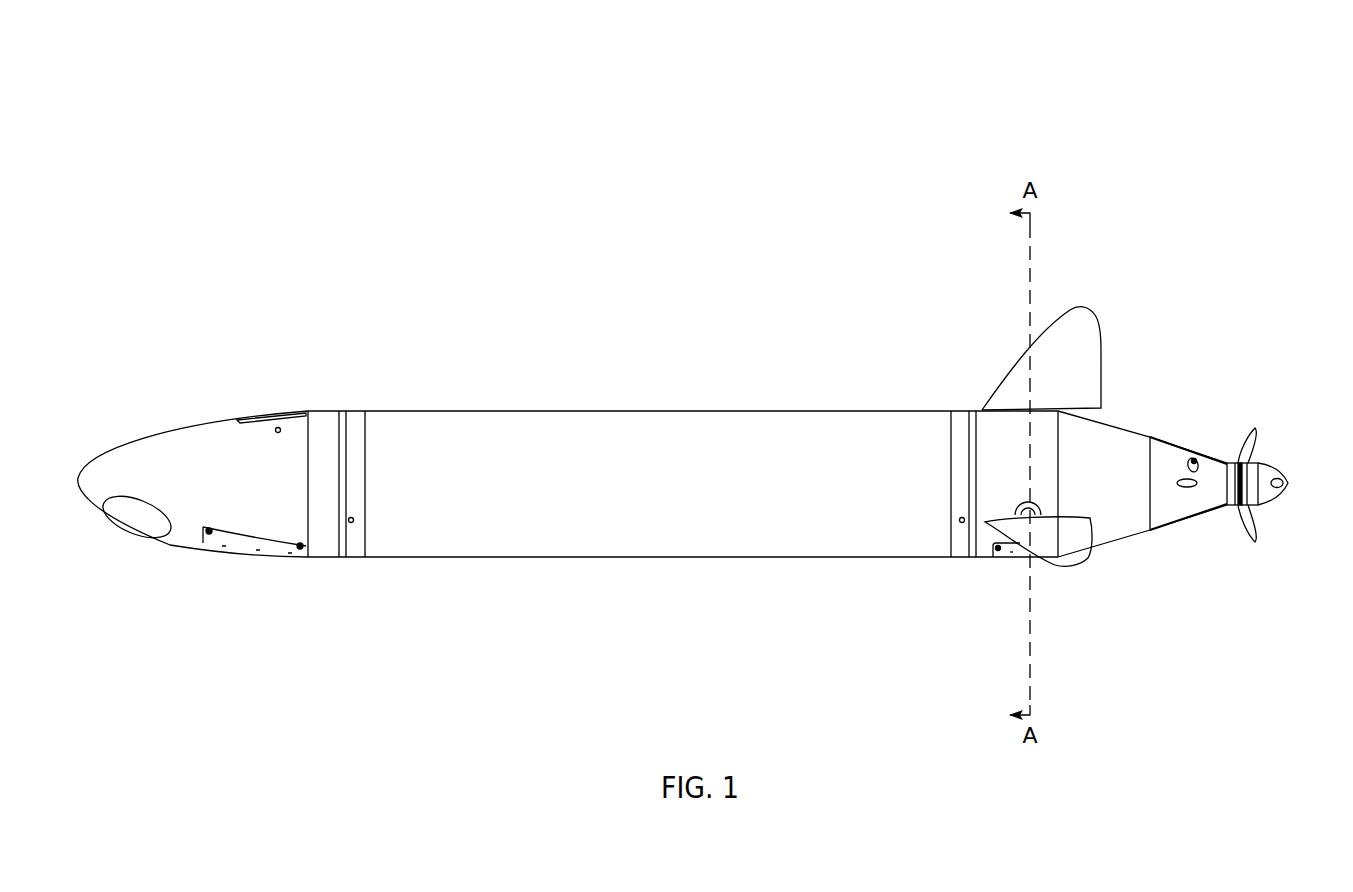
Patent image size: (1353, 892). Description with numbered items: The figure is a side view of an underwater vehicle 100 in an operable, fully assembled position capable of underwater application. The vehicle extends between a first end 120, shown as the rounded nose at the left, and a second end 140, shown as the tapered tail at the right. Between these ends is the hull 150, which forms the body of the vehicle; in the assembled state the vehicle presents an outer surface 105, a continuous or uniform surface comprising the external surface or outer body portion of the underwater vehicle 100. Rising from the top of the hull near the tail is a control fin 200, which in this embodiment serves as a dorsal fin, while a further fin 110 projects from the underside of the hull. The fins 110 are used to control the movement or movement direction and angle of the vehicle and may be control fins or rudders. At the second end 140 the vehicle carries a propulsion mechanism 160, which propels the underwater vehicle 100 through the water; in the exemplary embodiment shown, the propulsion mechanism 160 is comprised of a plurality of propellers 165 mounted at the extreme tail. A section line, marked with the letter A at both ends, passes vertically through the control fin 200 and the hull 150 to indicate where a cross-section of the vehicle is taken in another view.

The underwater vehicle 100 is at (270, 133).
The outer surface 105 is at (534, 408).
The fins 110 is at (1066, 552).
The first end 120 is at (190, 413).
The second end 140 is at (1129, 408).
The hull 150 is at (716, 521).
The propulsion mechanism 160 is at (1198, 420).
The propellers 165 is at (1256, 430).
The control fin 200 is at (1052, 318).